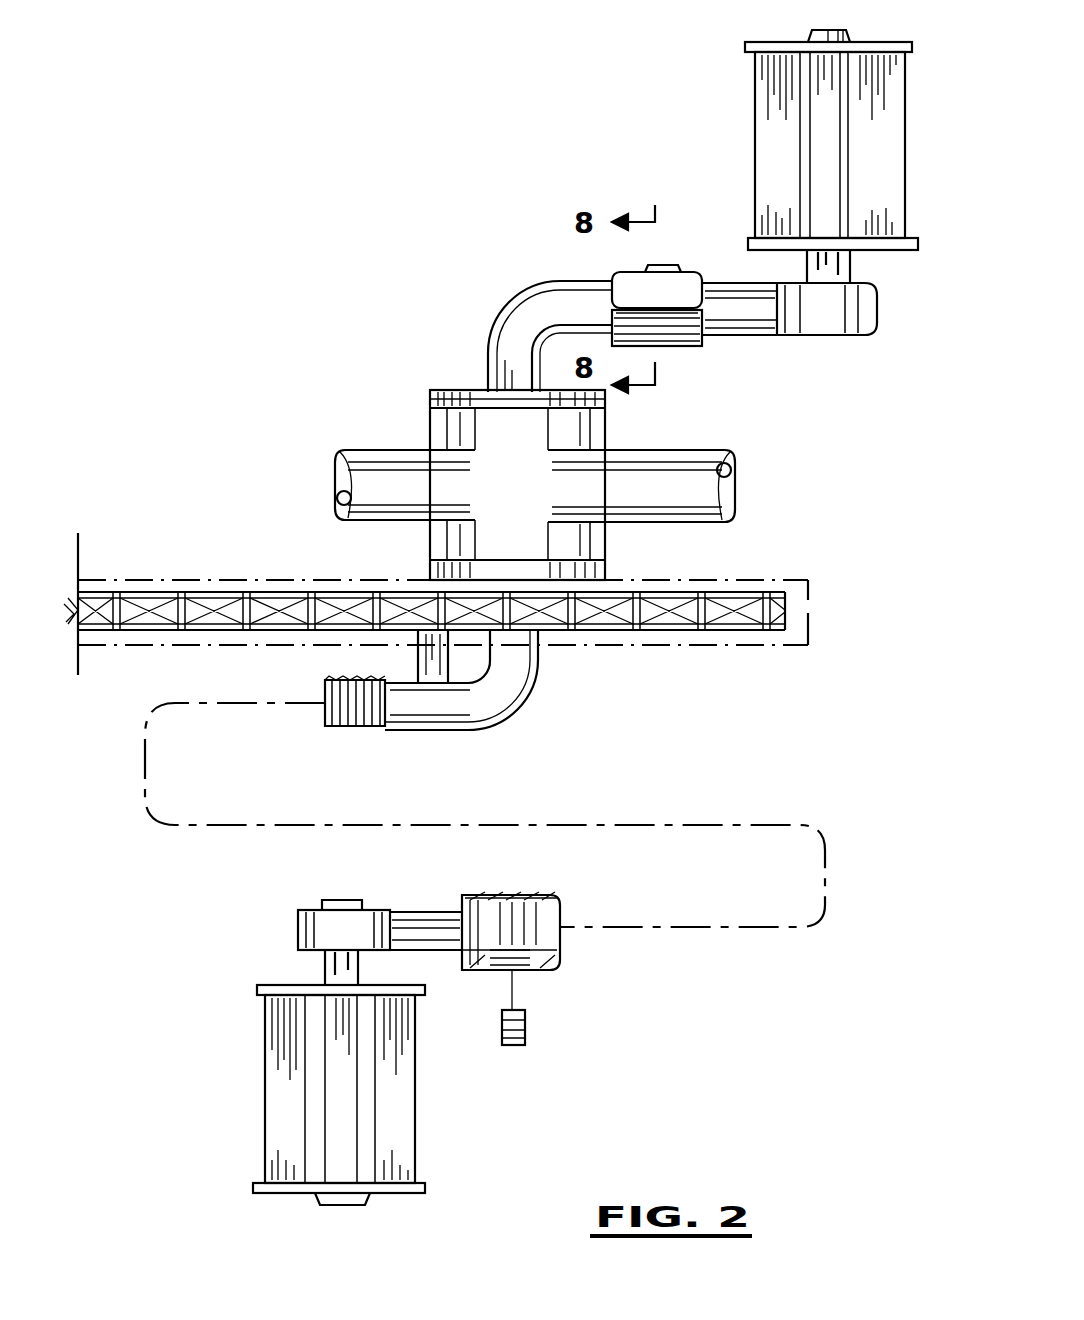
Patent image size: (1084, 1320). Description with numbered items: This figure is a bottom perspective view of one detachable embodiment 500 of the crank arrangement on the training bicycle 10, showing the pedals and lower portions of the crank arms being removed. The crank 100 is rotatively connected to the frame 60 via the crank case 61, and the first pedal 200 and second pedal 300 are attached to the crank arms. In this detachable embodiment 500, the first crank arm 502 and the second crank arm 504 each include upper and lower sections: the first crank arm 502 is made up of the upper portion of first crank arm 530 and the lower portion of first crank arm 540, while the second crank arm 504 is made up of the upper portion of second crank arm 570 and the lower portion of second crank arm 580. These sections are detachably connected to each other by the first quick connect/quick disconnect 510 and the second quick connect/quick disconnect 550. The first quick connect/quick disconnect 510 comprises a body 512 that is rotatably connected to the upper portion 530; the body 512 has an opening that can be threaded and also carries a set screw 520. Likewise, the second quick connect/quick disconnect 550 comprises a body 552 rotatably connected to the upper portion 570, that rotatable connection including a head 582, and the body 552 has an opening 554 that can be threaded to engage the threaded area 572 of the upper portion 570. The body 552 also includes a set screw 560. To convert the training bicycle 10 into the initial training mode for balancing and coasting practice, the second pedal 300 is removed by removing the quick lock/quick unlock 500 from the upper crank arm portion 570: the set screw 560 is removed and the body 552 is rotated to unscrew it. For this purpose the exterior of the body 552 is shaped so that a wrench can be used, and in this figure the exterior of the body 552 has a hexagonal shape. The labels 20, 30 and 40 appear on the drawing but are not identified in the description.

The detachable crank arms 500 is at (312, 56).
The first pedal 200 is at (768, 108).
The lower portion of first crank arm 540 is at (747, 310).
The first quick connect/quick disconnect 510 is at (600, 267).
The set screw 520 is at (662, 266).
The body 512 is at (677, 312).
The upper portion of first crank arm 530 is at (553, 300).
The first crank arm 502 is at (503, 337).
The training bicycle 10 is at (445, 430).
The crank case 61 is at (455, 393).
The frame 60 is at (360, 448).
The rail 30 is at (135, 595).
The truss 20 is at (757, 600).
The frame 40 is at (812, 607).
The crank 100 is at (507, 588).
The second crank arm 504 is at (532, 683).
The upper portion of second crank arm 570 is at (467, 710).
The threaded area of upper portion of second crank arm 572 is at (337, 728).
The second quick connect/quick disconnect 550 is at (545, 975).
The body 552 is at (552, 900).
The opening 554 is at (566, 948).
The head 582 is at (468, 975).
The set screw 560 is at (512, 1047).
The lower portion of second crank arm 580 is at (430, 925).
The second pedal 300 is at (270, 1097).